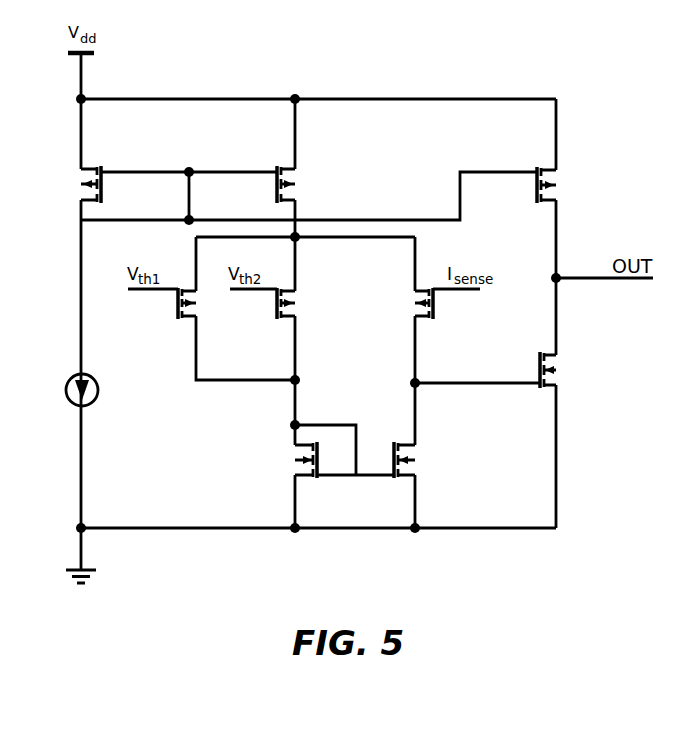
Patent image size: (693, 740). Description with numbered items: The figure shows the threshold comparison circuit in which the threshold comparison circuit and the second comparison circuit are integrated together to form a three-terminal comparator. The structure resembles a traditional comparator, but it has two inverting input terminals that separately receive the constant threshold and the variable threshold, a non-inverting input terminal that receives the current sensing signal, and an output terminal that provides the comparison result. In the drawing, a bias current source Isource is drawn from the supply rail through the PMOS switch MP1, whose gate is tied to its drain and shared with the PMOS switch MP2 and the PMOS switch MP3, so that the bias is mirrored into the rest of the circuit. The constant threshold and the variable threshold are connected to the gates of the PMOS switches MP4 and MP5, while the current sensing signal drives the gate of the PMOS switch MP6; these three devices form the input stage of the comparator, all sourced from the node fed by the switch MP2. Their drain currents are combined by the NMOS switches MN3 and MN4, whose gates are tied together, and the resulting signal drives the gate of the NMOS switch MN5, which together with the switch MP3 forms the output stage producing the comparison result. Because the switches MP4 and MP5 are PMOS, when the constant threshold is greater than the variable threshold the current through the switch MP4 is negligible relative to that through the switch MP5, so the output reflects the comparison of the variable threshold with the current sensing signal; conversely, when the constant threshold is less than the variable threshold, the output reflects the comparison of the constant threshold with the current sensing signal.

The PMOS transistor MP1 (diode-connected current mirror input) MP1 is at (68, 187).
The PMOS transistor MP2 (current mirror output) MP2 is at (306, 187).
The PMOS transistor MP3 (output pull-up) MP3 is at (568, 192).
The switch MP4 is at (171, 316).
The switch MP5 is at (270, 316).
The PMOS transistor MP6 (sense input) MP6 is at (439, 316).
The NMOS transistor MN3 (current mirror) MN3 is at (281, 470).
The NMOS transistor MN4 (current mirror) MN4 is at (430, 470).
The NMOS transistor MN5 (output pull-down) MN5 is at (571, 378).
The bias current source Isource is at (109, 404).